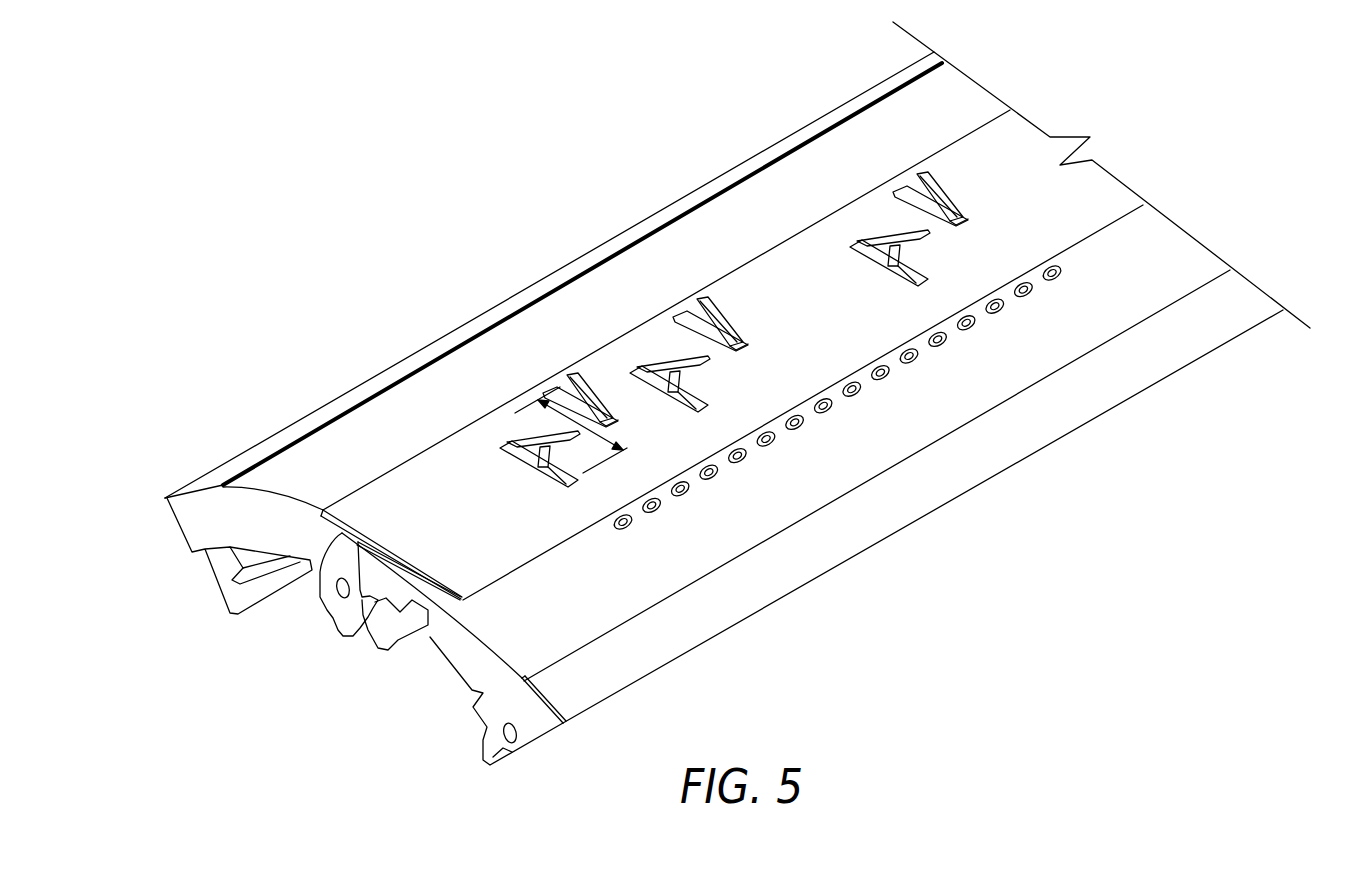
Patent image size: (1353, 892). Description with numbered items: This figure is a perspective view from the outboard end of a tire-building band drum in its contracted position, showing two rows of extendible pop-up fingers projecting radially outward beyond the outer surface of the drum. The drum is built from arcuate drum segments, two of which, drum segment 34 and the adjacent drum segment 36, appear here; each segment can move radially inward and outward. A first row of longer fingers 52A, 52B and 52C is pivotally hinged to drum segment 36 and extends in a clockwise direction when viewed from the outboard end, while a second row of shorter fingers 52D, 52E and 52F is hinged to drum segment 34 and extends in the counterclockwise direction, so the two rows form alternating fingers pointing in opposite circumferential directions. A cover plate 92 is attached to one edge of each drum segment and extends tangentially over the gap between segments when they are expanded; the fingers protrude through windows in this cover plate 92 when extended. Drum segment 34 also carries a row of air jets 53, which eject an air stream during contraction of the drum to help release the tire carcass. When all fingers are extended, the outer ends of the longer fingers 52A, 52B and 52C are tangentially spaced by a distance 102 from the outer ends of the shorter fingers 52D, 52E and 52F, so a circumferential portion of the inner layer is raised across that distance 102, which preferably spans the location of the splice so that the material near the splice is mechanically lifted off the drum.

The drum segment 34 is at (467, 652).
The drum segment 36 is at (237, 533).
The cover plate 92 is at (345, 538).
The air jets 53 is at (797, 428).
The distance 102 is at (607, 442).
The extendible finger 52A is at (525, 432).
The extendible finger 52B is at (655, 335).
The extendible finger 52C is at (910, 230).
The extendible finger 52D is at (565, 372).
The extendible finger 52E is at (700, 298).
The extendible finger 52F is at (913, 177).